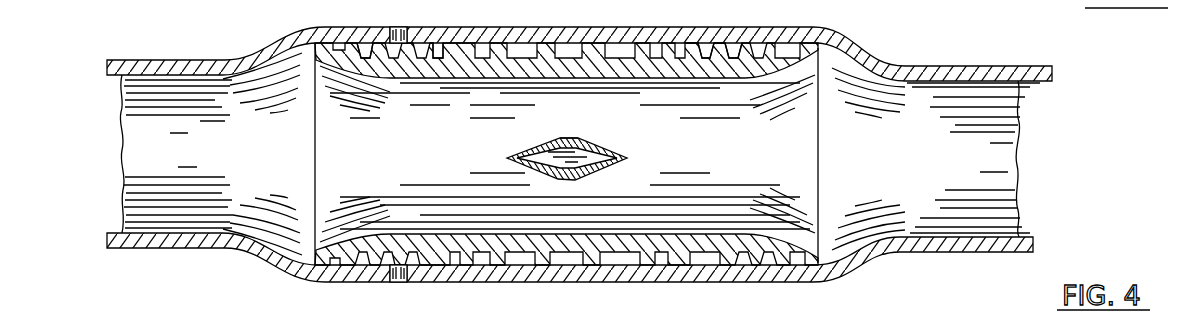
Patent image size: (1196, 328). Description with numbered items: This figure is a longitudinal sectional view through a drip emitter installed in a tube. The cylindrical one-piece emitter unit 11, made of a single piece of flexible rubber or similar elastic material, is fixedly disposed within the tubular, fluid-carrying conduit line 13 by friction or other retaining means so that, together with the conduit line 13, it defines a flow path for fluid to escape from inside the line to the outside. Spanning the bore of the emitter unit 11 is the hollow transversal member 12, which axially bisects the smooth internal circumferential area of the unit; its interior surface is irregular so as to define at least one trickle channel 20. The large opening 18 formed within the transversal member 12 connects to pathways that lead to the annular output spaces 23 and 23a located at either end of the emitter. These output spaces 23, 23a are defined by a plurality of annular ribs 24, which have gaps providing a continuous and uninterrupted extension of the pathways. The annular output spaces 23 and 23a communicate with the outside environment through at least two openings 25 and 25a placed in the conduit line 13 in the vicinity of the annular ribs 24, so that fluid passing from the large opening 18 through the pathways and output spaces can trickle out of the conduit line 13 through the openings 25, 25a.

The emitter unit 11 is at (300, 148).
The transversal member 12 is at (588, 146).
The conduit line 13 is at (177, 62).
The large opening 18 is at (588, 157).
The trickle channel 20 is at (565, 143).
The annular output space 23 is at (698, 48).
The annular output space 23a is at (433, 50).
The annular ribs 24 is at (372, 50).
The opening 25 is at (401, 40).
The opening 25a is at (423, 2).